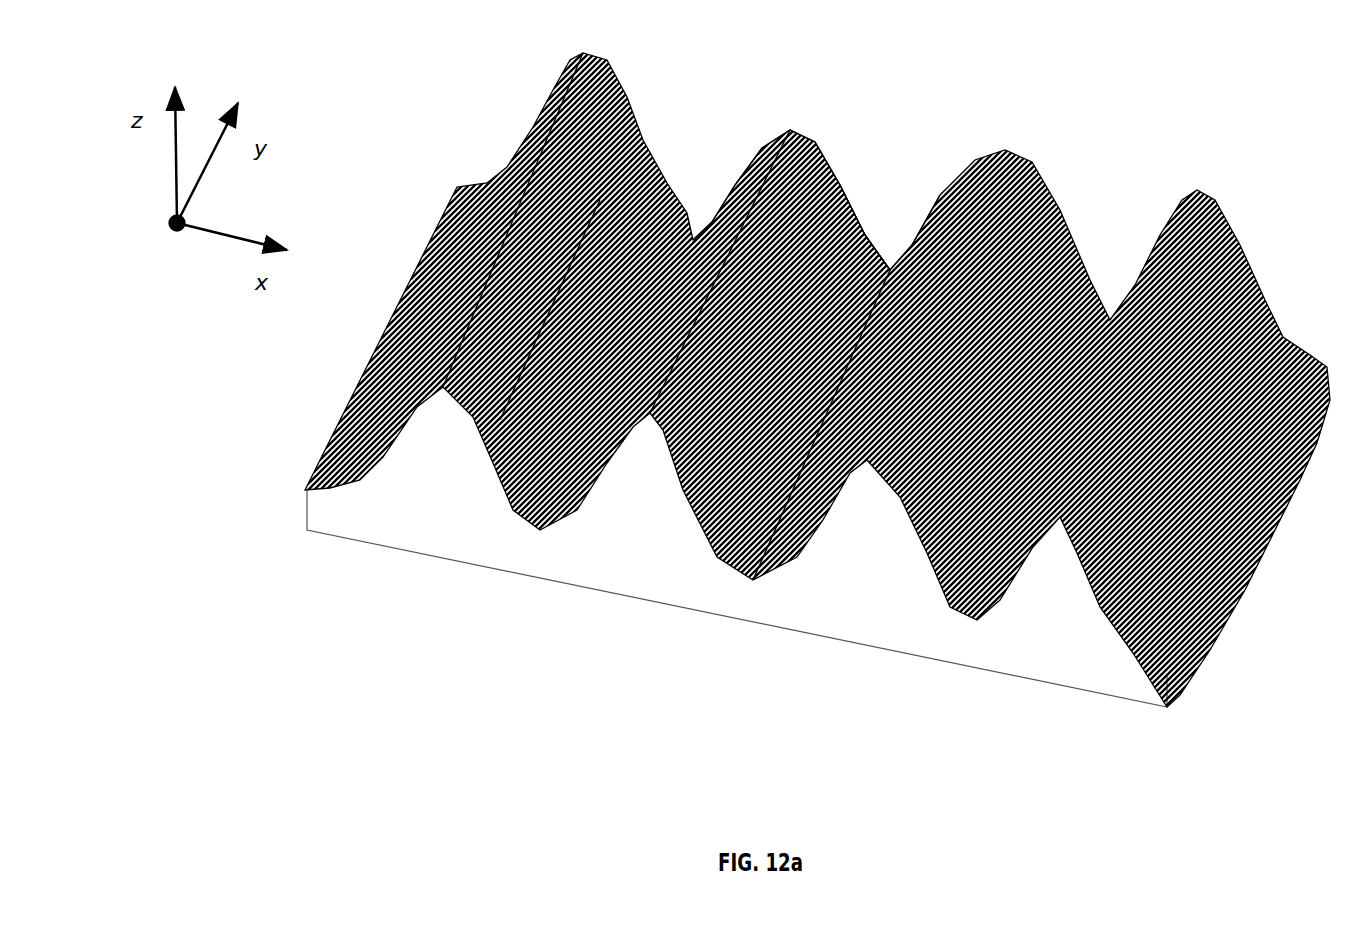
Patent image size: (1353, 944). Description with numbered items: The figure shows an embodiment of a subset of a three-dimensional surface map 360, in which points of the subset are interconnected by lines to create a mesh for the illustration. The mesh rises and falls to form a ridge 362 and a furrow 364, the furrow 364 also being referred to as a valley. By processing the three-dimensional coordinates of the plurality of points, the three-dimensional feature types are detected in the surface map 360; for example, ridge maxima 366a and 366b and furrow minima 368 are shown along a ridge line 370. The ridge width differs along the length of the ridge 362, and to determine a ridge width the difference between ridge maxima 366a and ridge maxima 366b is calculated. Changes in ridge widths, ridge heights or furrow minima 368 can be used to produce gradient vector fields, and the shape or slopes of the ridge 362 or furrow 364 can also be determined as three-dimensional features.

The subset of a 3D surface map 360 is at (753, 413).
The ridge 362 is at (818, 120).
The furrow 364 is at (890, 265).
The ridge maxima 366a is at (517, 252).
The ridge maxima 366b is at (707, 327).
The furrow minima 368 is at (793, 463).
The ridge line 370 is at (552, 333).